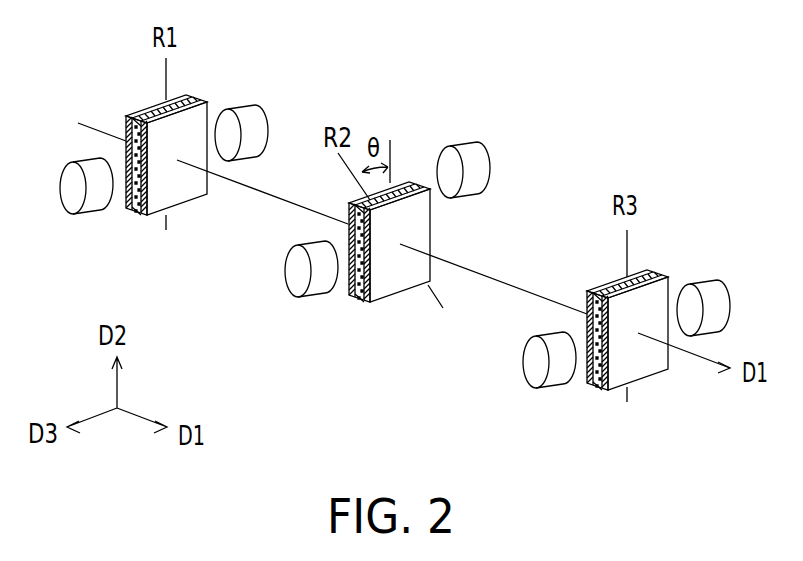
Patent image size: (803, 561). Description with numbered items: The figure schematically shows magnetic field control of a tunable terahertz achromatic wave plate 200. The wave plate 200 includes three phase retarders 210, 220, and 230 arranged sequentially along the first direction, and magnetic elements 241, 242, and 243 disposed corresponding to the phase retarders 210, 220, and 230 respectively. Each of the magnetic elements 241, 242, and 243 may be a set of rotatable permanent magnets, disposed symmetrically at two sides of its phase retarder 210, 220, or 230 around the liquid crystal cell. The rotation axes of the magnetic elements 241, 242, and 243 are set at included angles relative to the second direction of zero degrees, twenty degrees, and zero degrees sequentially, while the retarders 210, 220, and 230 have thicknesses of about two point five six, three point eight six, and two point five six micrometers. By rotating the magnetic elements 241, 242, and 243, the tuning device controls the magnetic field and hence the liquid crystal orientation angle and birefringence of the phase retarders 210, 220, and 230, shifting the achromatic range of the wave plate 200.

The tunable terahertz achromatic wave plate 200 is at (765, 468).
The phase retarder 210 is at (183, 205).
The phase retarder 220 is at (410, 288).
The phase retarder 230 is at (643, 378).
The magnetic element 241 is at (238, 115).
The magnetic element 242 is at (463, 152).
The magnetic element 243 is at (700, 288).